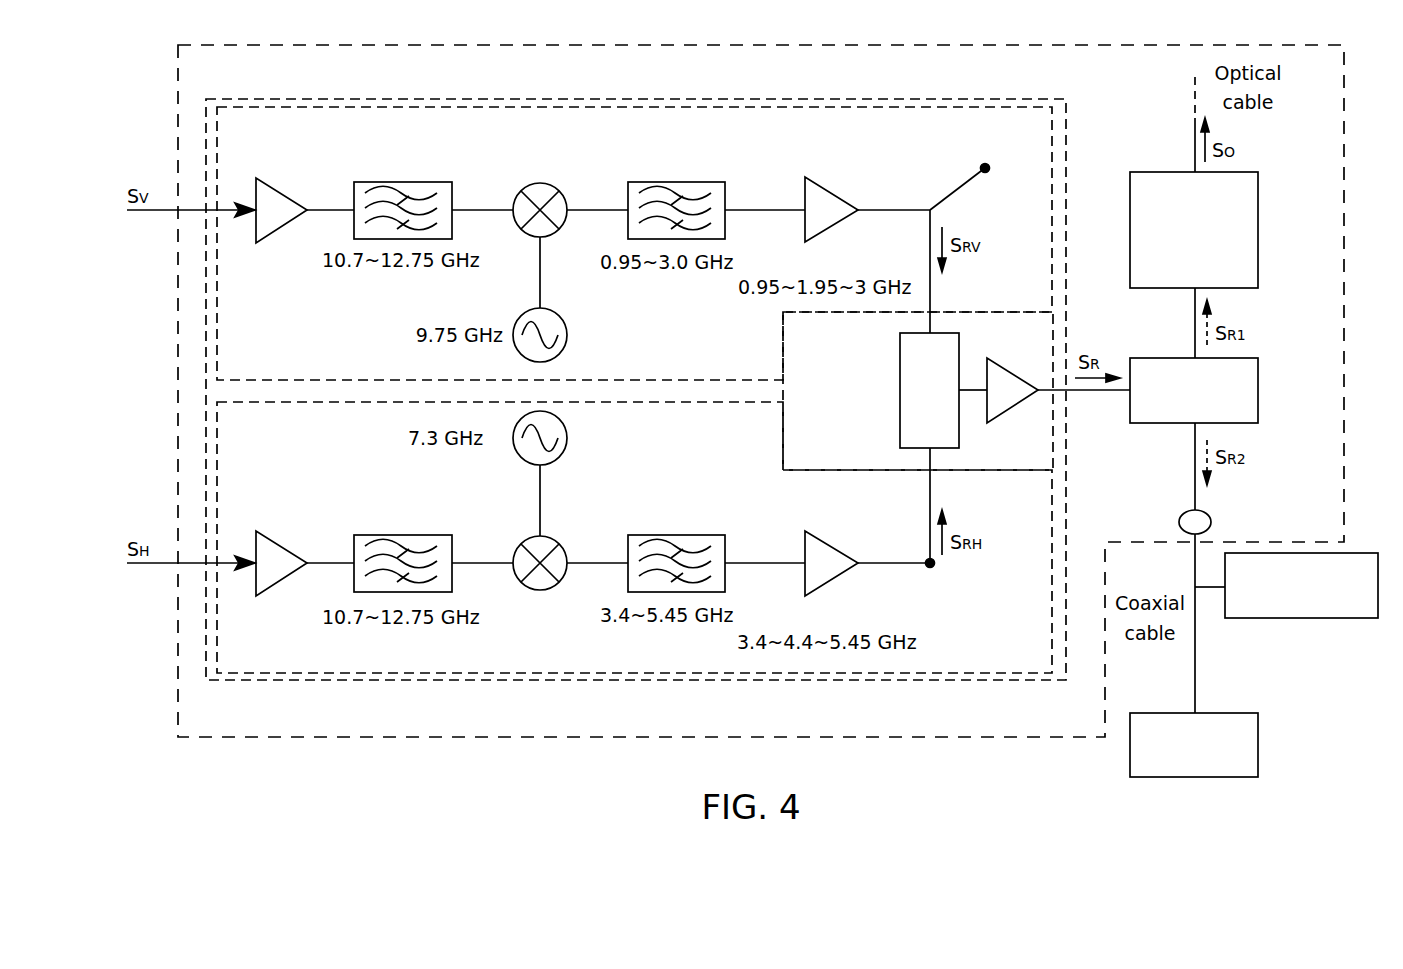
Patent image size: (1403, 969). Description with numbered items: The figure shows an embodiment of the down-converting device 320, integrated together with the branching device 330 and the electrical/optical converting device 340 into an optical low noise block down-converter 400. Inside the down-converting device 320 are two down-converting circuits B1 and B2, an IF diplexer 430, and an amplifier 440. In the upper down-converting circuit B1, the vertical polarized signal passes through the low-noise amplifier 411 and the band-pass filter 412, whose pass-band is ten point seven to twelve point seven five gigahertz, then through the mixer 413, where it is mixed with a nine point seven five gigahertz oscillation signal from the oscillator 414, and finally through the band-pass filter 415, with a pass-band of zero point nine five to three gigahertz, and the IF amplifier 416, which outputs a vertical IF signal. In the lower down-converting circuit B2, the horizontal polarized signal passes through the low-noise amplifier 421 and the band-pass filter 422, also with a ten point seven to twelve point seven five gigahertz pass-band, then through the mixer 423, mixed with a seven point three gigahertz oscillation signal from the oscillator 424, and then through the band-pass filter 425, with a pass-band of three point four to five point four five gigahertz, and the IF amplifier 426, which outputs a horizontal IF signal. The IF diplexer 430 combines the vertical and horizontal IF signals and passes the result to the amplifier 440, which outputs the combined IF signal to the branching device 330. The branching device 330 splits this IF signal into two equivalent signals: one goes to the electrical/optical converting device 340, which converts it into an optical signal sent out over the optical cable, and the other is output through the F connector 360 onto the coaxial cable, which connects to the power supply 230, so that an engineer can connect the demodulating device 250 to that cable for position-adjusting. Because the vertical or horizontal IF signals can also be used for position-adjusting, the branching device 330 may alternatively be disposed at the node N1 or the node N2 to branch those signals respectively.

The optical low noise block down-converter 400 is at (553, 737).
The down-converting device 320 is at (508, 680).
The down-converting circuit B1 is at (608, 107).
The down-converting circuit B2 is at (607, 673).
The low-noise amplifier 411 is at (285, 178).
The band-pass filter 412 is at (405, 182).
The mixer 413 is at (541, 183).
The oscillator 414 is at (567, 335).
The band-pass filter 415 is at (679, 182).
The IF amplifier 416 is at (832, 177).
The low-noise amplifier 421 is at (285, 532).
The band-pass filter 422 is at (405, 535).
The mixer 423 is at (540, 590).
The oscillator 424 is at (567, 438).
The band-pass filter 425 is at (679, 535).
The IF amplifier 426 is at (832, 531).
The IF diplexer 430 is at (898, 383).
The amplifier 440 is at (1015, 358).
The node N1 is at (973, 175).
The node N2 is at (939, 580).
The electrical/optical converting device 340 is at (1258, 228).
The branching device 330 is at (1258, 388).
The F connector 360 is at (1179, 520).
The demodulating device 250 is at (1335, 618).
The power supply 230 is at (1258, 743).